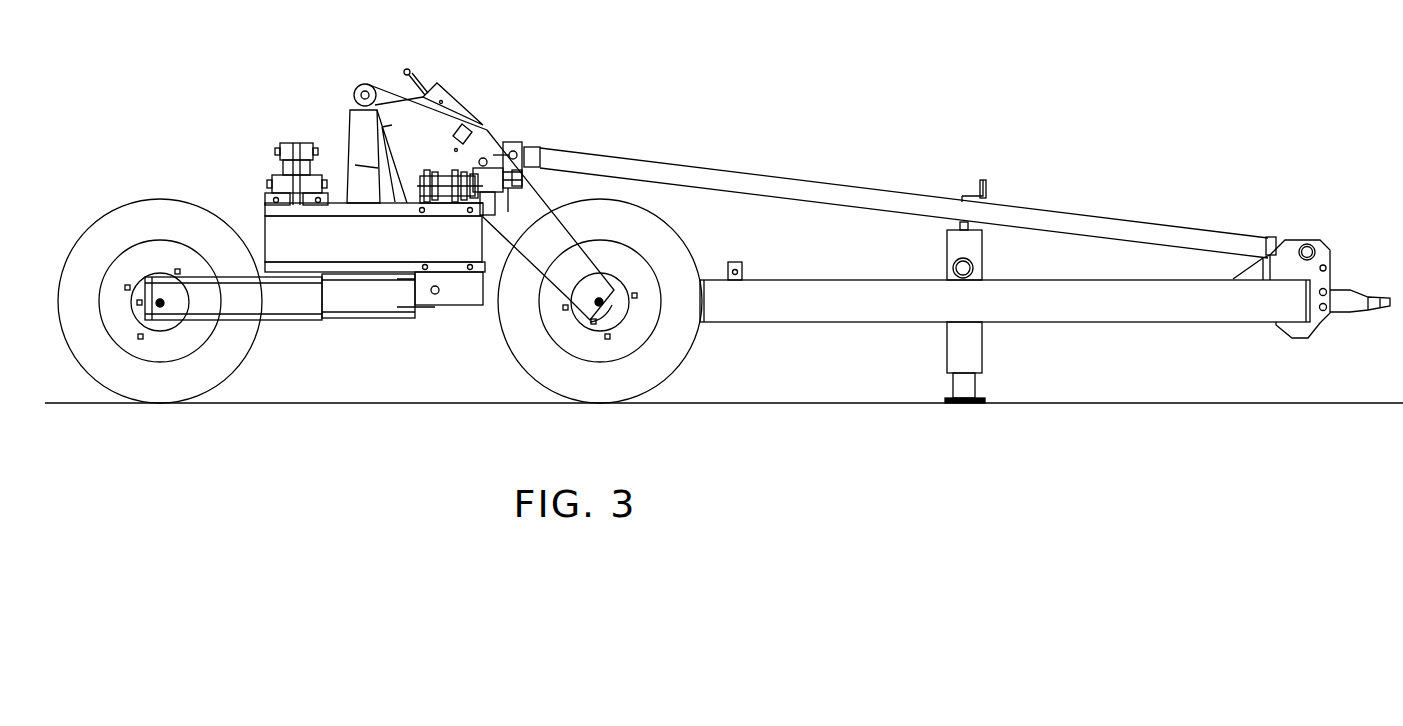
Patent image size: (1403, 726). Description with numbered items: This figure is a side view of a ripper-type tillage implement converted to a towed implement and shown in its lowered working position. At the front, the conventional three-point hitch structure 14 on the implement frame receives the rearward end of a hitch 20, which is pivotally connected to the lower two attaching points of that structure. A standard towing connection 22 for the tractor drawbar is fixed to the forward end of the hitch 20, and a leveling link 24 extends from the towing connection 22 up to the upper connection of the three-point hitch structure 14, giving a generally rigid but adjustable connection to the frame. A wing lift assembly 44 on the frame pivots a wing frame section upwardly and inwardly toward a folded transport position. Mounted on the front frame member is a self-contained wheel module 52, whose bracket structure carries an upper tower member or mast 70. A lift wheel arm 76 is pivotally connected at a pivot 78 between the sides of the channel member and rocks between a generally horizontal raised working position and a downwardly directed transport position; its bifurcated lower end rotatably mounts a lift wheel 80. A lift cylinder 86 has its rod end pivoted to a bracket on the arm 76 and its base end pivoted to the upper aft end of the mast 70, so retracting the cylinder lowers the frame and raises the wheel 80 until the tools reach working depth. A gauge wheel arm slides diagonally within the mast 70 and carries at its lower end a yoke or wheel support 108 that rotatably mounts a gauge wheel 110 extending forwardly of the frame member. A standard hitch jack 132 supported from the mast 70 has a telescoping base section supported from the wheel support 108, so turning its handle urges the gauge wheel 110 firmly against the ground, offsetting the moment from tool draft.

The three-point hitch structure 14 is at (527, 118).
The hitch 20 is at (1141, 162).
The towing connection 22 is at (1345, 288).
The leveling link 24 is at (765, 172).
The wing lift assembly 44 is at (272, 163).
The first wheel module 52 is at (487, 336).
The mast 70 is at (372, 85).
The lift wheel arm 76 is at (248, 305).
The pivotal connection 78 is at (442, 295).
The lift wheel 80 is at (175, 397).
The lift cylinder 86 is at (357, 145).
The wheel support 108 is at (537, 197).
The gauge wheel 110 is at (685, 350).
The hitch jack 132 is at (978, 343).